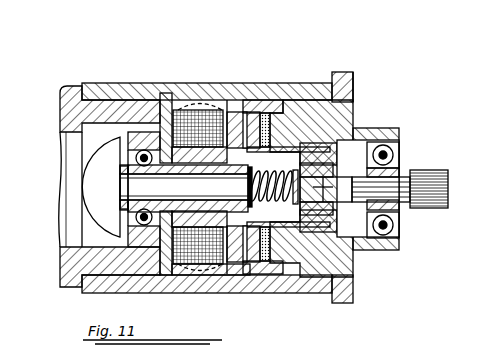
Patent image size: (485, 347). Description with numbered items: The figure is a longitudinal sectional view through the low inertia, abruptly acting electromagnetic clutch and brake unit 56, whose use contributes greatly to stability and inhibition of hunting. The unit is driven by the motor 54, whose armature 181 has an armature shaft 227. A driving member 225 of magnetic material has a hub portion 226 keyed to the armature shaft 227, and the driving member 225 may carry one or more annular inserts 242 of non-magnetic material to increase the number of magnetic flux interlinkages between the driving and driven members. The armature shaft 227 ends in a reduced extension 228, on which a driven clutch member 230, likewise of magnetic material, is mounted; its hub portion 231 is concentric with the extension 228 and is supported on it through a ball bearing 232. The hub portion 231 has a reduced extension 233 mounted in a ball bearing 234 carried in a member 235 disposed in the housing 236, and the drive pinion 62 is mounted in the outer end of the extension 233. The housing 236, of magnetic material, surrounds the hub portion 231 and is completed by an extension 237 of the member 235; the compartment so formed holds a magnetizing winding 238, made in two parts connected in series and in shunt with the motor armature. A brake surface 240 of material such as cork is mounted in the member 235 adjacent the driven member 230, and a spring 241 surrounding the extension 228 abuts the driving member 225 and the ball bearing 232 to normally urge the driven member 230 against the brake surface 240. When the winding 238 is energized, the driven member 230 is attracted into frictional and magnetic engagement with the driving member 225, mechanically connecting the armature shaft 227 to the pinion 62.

The motor 54 is at (62, 81).
The electromagnetic clutch and brake unit 56 is at (291, 77).
The drive pinion 62 is at (430, 172).
The armature 181 is at (80, 162).
The driving member 225 is at (240, 112).
The hub portion 226 is at (184, 175).
The armature shaft 227 is at (130, 206).
The reduced extension 228 is at (369, 155).
The driven clutch member 230 is at (268, 275).
The hub portion 231 is at (313, 242).
The ball bearing 232 is at (369, 225).
The reduced extension 233 is at (401, 212).
The ball bearing 234 is at (378, 137).
The member 235 is at (353, 111).
The housing 236 is at (354, 84).
The extension 237 is at (180, 268).
The magnetizing winding 238 is at (185, 108).
The brake surface 240 is at (332, 84).
The spring 241 is at (297, 201).
The annular inserts 242 is at (226, 264).